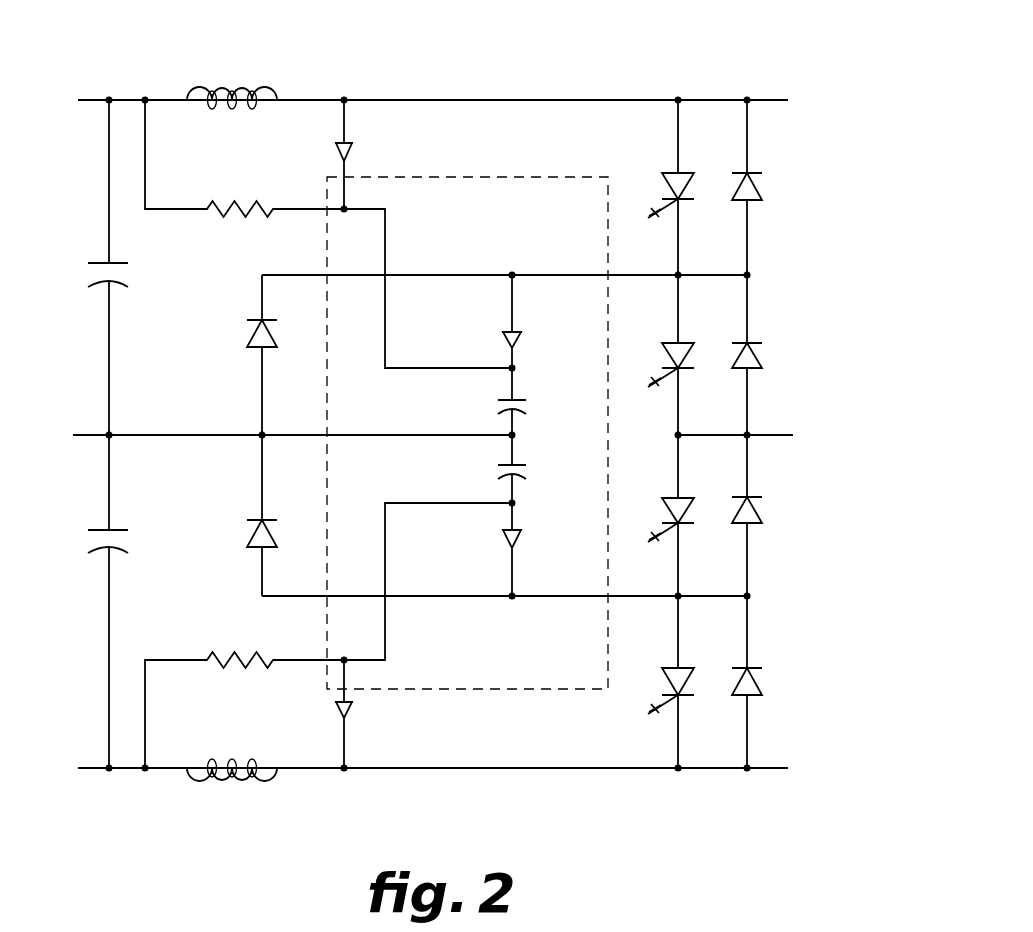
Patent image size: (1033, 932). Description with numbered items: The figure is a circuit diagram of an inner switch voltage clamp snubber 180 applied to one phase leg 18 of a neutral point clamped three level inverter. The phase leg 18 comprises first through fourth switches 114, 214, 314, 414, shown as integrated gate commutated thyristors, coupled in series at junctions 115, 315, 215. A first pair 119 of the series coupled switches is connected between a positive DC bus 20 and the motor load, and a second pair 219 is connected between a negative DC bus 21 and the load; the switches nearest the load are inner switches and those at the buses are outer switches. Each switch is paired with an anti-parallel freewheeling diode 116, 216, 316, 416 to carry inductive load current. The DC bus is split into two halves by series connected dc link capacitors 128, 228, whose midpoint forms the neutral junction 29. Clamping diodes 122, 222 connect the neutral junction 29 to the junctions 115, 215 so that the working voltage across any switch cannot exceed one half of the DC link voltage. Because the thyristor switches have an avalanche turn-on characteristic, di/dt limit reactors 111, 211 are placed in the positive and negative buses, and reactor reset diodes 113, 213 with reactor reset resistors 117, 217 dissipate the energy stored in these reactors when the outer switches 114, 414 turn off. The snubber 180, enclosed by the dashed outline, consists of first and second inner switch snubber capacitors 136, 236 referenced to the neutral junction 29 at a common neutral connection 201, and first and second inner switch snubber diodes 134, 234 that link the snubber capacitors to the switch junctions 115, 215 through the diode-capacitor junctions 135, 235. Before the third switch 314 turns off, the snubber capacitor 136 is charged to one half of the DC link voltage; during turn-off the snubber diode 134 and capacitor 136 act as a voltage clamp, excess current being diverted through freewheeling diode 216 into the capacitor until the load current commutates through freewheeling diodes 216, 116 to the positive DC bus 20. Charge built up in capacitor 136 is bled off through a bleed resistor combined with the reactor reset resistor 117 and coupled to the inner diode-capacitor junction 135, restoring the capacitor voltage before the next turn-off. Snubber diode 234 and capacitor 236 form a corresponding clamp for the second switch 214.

The phase leg 18 is at (715, 70).
The positive DC bus 20 is at (450, 98).
The negative DC bus 21 is at (445, 769).
The neutral junction 29 is at (110, 434).
The reactor 111 is at (242, 86).
The reactor reset diode 113 is at (336, 147).
The first switch 114 is at (661, 174).
The junction 115 is at (680, 274).
The freewheeling diode 116 is at (753, 173).
The reactor reset resistor 117 is at (212, 207).
The first pair of series coupled switches 119 is at (715, 200).
The clamping diode 122 is at (252, 333).
The dc link capacitor 128 is at (120, 263).
The first inner switch snubber diode 134 is at (522, 334).
The inner diode-capacitor junction 135 is at (512, 369).
The first inner switch snubber capacitor 136 is at (523, 410).
The inner switch voltage clamp snubber 180 is at (327, 238).
The neutral node 201 is at (512, 436).
The reactor 211 is at (222, 783).
The reactor reset diode 213 is at (336, 706).
The second switch 214 is at (662, 345).
The junction 215 is at (678, 598).
The freewheeling diode 216 is at (753, 343).
The reactor reset resistor 217 is at (227, 666).
The second pair of series coupled switches 219 is at (715, 532).
The clamping diode 222 is at (252, 535).
The dc link capacitor 228 is at (120, 530).
The second inner switch snubber diode 234 is at (522, 533).
The node between C3S and D3S 235 is at (512, 504).
The second inner switch snubber capacitor 236 is at (523, 464).
The third switch 314 is at (663, 500).
The junction 315 is at (680, 432).
The freewheeling diode 316 is at (753, 497).
The fourth switch 414 is at (661, 682).
The freewheeling diode 416 is at (753, 698).